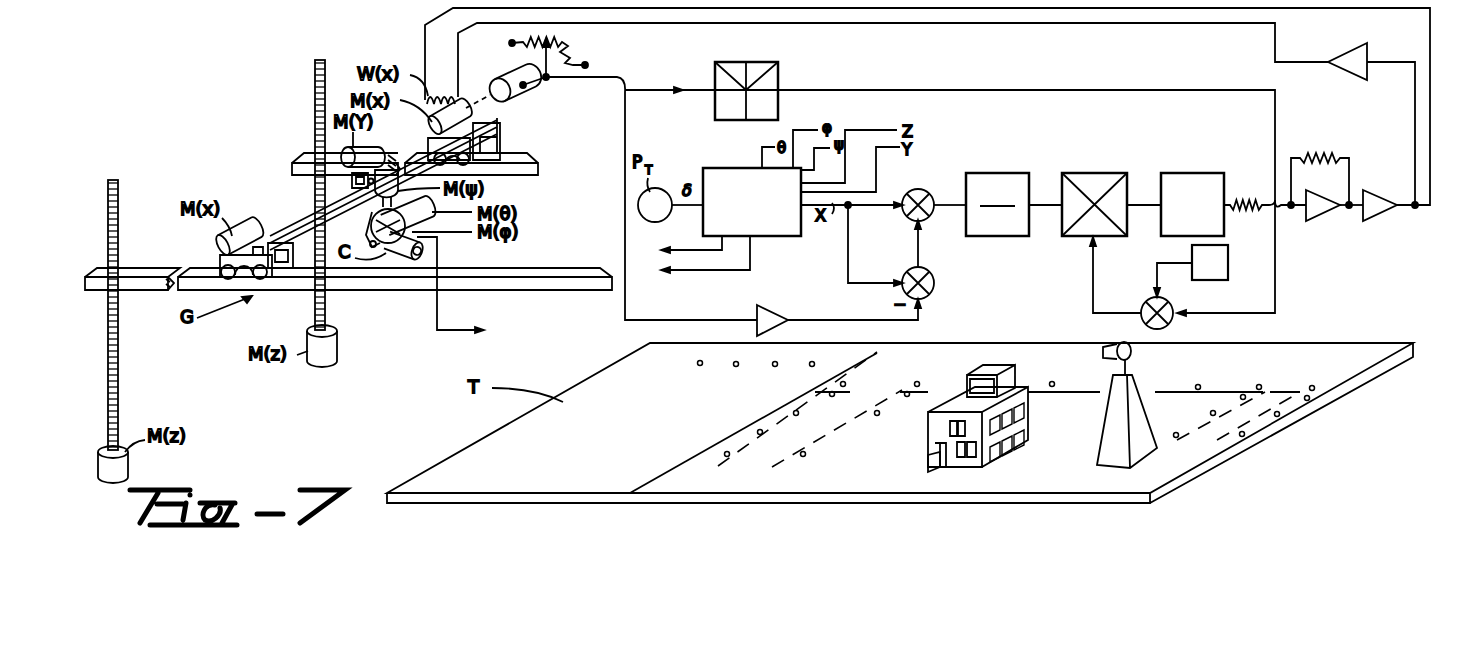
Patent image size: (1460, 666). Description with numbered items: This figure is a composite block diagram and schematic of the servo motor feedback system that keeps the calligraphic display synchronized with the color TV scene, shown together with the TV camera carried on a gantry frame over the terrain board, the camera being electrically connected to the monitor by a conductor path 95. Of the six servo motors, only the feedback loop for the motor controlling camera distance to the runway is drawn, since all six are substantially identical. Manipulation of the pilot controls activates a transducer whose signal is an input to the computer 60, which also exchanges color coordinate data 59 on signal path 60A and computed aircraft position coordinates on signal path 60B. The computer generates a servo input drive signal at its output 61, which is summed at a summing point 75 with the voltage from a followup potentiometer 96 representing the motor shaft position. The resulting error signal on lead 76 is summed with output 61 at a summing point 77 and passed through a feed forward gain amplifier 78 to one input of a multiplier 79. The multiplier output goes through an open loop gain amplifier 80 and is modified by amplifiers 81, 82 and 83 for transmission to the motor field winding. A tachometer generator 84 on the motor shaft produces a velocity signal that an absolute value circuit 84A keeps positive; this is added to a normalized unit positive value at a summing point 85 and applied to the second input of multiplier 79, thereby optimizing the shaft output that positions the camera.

The color coordinate data 59 is at (834, 102).
The computer 60 is at (776, 242).
The signal path 60A is at (711, 272).
The signal path 60B is at (696, 249).
The output 61 is at (869, 213).
The summing point 75 is at (936, 283).
The lead 76 is at (920, 250).
The summing point 77 is at (925, 190).
The feed forward gain amplifier 78 is at (995, 173).
The multiplier 79 is at (1085, 173).
The open loop gain amplifier 80 is at (1177, 173).
The amplifier 81 is at (1320, 222).
The amplifier 82 is at (1380, 222).
The amplifier 83 is at (1362, 79).
The tachometer generator 84 is at (513, 76).
The absolute value circuit 84A is at (777, 62).
The summing point 85 is at (1173, 325).
The conductor path 95 is at (449, 336).
The followup potentiometer 96 is at (572, 52).